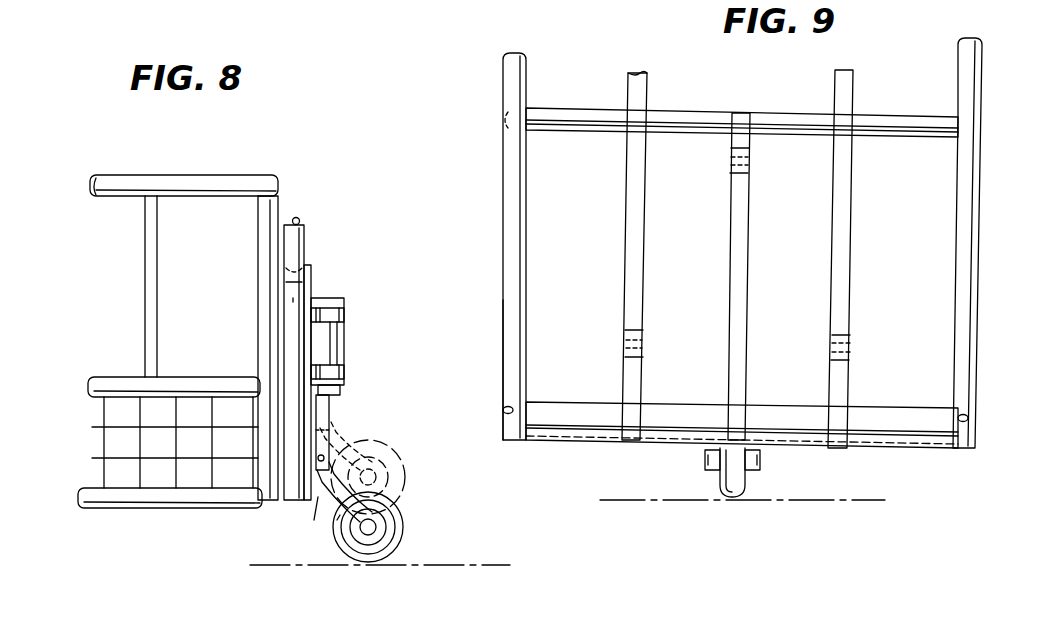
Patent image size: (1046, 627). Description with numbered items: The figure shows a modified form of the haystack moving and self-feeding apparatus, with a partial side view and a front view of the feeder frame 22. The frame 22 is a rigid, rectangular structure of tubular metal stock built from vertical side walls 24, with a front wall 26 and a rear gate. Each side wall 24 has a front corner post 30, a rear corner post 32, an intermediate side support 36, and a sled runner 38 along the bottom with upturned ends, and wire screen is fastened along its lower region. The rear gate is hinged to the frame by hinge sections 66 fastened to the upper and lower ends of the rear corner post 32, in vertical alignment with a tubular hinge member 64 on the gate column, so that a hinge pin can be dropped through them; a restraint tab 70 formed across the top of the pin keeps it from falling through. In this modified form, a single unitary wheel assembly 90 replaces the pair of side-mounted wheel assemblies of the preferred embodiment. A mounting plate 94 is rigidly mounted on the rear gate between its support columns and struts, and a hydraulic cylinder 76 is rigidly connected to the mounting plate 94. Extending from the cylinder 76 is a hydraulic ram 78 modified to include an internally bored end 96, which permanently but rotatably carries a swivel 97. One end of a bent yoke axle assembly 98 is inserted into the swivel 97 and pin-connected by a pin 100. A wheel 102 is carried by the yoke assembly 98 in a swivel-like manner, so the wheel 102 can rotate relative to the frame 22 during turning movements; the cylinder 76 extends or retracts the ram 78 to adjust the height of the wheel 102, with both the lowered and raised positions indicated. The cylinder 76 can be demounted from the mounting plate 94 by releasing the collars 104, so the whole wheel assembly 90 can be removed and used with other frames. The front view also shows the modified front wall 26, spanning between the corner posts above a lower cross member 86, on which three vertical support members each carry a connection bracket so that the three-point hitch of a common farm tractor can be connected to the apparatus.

In FIG. 8, the feeder frame 22 is at (172, 172).
In FIG. 9, the feeder frame 22 is at (502, 98).
In FIG. 9, the vertical side wall 24 is at (502, 152).
In FIG. 9, the front wall 26 is at (554, 110).
In FIG. 9, the front corner post 30 is at (966, 62).
In FIG. 8, the rear corner post 32 is at (262, 369).
In FIG. 8, the intermediate side support 36 is at (109, 377).
In FIG. 8, the sled runner 38 is at (113, 508).
In FIG. 8, the tubular hinge member 64 is at (296, 302).
In FIG. 8, the hinge section 66 is at (306, 242).
In FIG. 8, the restraint tab 70 is at (298, 218).
In FIG. 8, the hydraulic cylinder 76 is at (363, 334).
In FIG. 8, the hydraulic ram 78 is at (331, 412).
In FIG. 9, the bottom cross rail 86 is at (572, 434).
In FIG. 8, the unitary wheel assembly 90 is at (418, 488).
In FIG. 9, the unitary wheel assembly 90 is at (771, 464).
In FIG. 8, the mounting plate 94 is at (311, 272).
In FIG. 8, the internally bored end 96 is at (334, 447).
In FIG. 8, the swivel 97 is at (318, 500).
In FIG. 8, the bent yoke axle assembly 98 is at (338, 522).
In FIG. 8, the pin 100 is at (318, 461).
In FIG. 8, the wheel 102 is at (403, 545).
In FIG. 9, the wheel 102 is at (742, 490).
In FIG. 8, the collar 104 is at (345, 316).